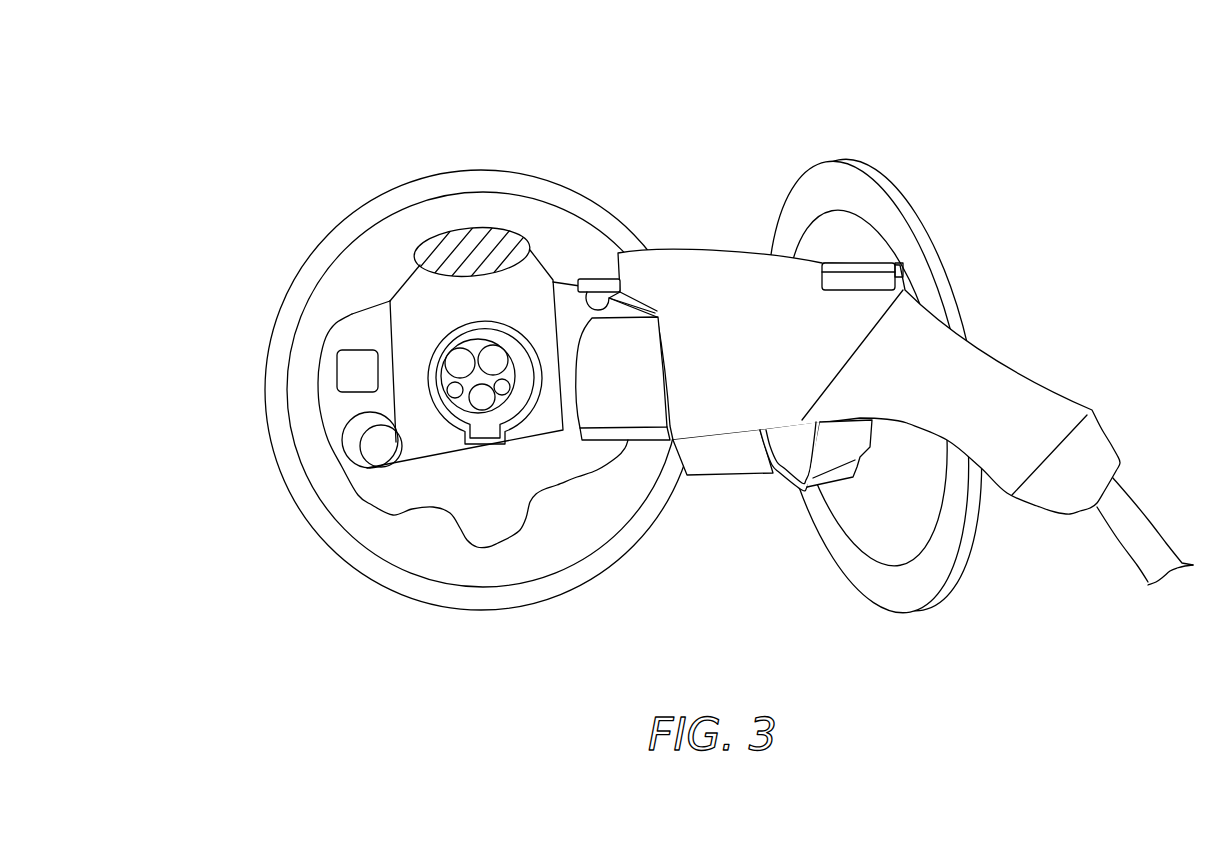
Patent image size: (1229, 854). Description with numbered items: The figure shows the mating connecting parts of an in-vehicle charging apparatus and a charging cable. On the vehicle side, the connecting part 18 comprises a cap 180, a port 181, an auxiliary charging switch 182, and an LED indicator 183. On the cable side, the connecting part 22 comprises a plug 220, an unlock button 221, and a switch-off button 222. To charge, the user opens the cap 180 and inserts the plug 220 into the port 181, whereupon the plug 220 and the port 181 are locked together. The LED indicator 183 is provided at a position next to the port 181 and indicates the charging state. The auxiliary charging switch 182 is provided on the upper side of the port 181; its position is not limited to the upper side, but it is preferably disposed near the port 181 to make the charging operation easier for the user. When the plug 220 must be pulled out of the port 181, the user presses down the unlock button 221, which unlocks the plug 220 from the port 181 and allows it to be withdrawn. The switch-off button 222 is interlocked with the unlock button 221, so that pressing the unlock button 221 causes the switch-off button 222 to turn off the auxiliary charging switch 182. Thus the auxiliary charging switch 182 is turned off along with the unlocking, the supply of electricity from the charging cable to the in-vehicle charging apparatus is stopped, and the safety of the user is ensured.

The connecting part 18 is at (545, 106).
The cap 180 is at (895, 195).
The port 181 is at (455, 430).
The auxiliary charging switch 182 is at (473, 245).
The LED indicator 183 is at (350, 372).
The connecting part 22 is at (711, 226).
The plug 220 is at (637, 433).
The unlock button 221 is at (860, 277).
The switch-off button 222 is at (592, 279).